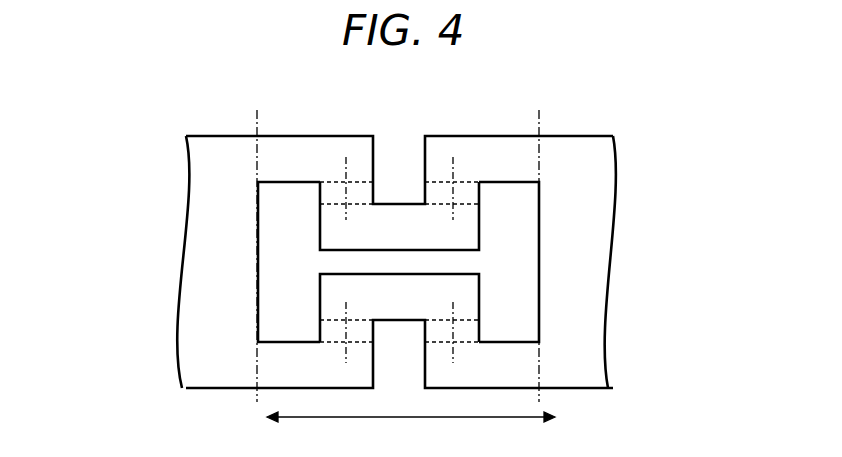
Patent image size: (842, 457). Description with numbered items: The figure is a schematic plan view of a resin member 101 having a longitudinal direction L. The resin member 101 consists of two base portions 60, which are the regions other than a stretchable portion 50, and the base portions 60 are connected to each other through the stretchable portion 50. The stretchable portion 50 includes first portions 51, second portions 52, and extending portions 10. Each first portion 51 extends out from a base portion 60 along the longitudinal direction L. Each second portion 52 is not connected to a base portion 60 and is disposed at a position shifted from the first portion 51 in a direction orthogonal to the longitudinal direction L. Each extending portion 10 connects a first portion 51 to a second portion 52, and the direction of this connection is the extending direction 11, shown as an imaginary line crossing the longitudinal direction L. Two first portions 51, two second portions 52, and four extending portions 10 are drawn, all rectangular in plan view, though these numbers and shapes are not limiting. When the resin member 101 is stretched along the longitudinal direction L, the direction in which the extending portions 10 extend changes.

The extending portion 10 is at (353, 190).
The extending direction 11 is at (345, 168).
The stretchable portion 50 is at (538, 123).
The first portion 51 is at (282, 170).
The second portion 52 is at (340, 242).
The base portion 60 is at (218, 157).
The resin member 101 is at (683, 140).
The longitudinal direction L is at (555, 417).